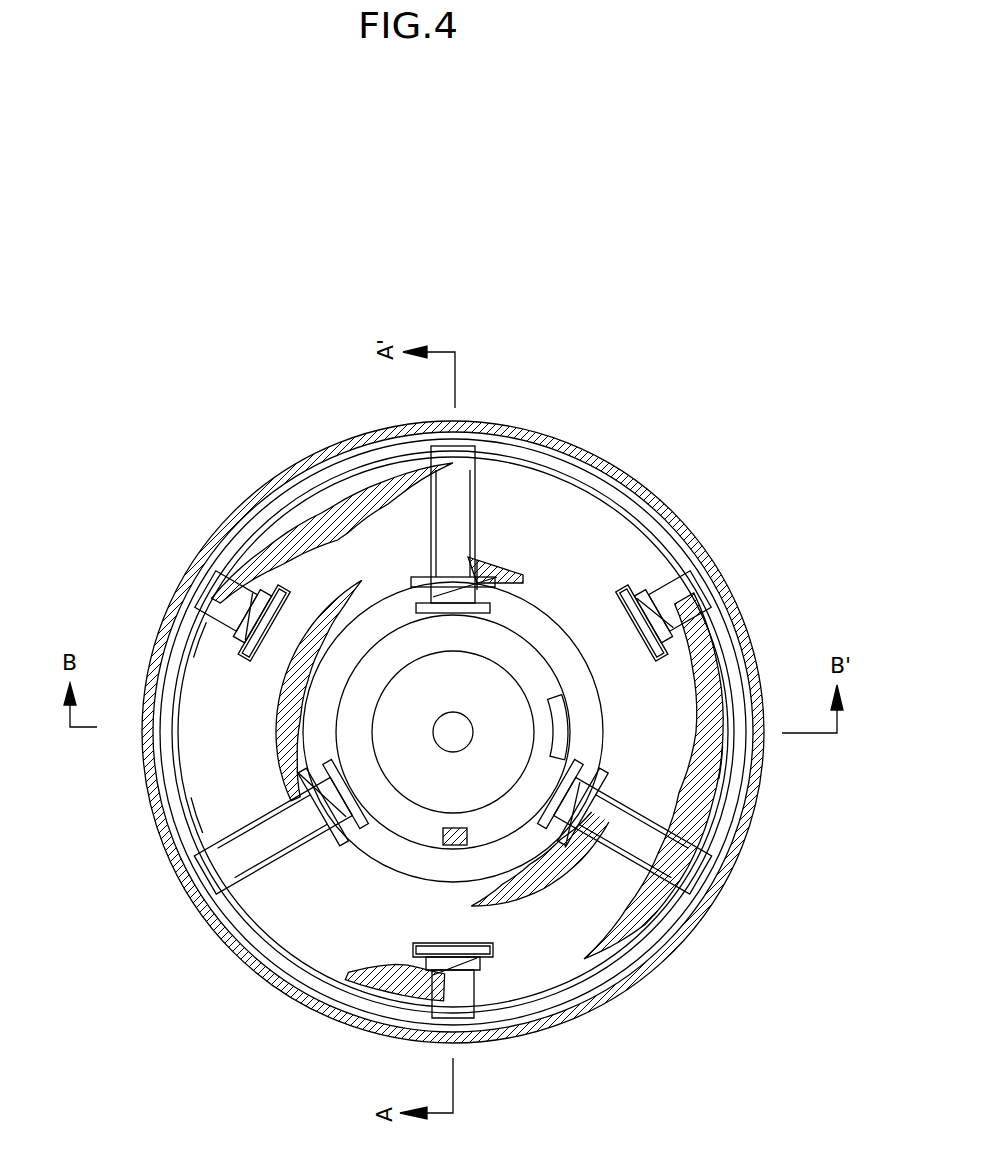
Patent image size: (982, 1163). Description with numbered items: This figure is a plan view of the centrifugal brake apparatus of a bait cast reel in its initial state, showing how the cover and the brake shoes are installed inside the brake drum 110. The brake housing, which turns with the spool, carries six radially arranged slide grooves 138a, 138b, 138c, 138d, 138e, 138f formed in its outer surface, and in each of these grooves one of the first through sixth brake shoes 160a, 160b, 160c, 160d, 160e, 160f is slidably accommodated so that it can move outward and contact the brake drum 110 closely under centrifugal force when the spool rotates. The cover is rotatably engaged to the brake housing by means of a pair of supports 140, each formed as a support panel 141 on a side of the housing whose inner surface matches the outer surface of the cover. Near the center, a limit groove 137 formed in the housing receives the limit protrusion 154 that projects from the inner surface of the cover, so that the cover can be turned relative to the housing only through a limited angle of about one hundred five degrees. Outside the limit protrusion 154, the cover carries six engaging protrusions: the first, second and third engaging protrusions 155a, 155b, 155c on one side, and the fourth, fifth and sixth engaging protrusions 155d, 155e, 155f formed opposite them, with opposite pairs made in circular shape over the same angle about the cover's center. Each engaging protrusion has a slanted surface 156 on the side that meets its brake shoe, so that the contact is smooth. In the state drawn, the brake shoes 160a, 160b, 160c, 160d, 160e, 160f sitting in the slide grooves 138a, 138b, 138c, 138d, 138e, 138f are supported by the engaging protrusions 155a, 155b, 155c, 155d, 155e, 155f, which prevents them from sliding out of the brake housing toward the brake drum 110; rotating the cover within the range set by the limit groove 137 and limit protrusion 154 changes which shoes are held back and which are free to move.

The brake drum 110 is at (692, 522).
The limit groove 137 is at (500, 873).
The slide groove 138a is at (483, 493).
The slide groove 138b is at (657, 817).
The slide groove 138c is at (252, 888).
The slide groove 138d is at (667, 575).
The slide groove 138e is at (480, 990).
The slide groove 138f is at (218, 630).
The support 140 is at (752, 742).
The support panel 141 is at (740, 777).
The limit protrusion 154 is at (440, 843).
The first engaging protrusion 155a is at (477, 583).
The second engaging protrusion 155b is at (675, 918).
The third engaging protrusion 155c is at (290, 743).
The fourth engaging protrusion 155d is at (707, 637).
The fifth engaging protrusion 155e is at (446, 992).
The sixth engaging protrusion 155f is at (268, 547).
The slanted surface 156 is at (525, 582).
The first brake shoe 160a is at (460, 523).
The second brake shoe 160b is at (650, 847).
The third brake shoe 160c is at (227, 863).
The fourth brake shoe 160d is at (680, 602).
The fifth brake shoe 160e is at (458, 992).
The sixth brake shoe 160f is at (215, 603).